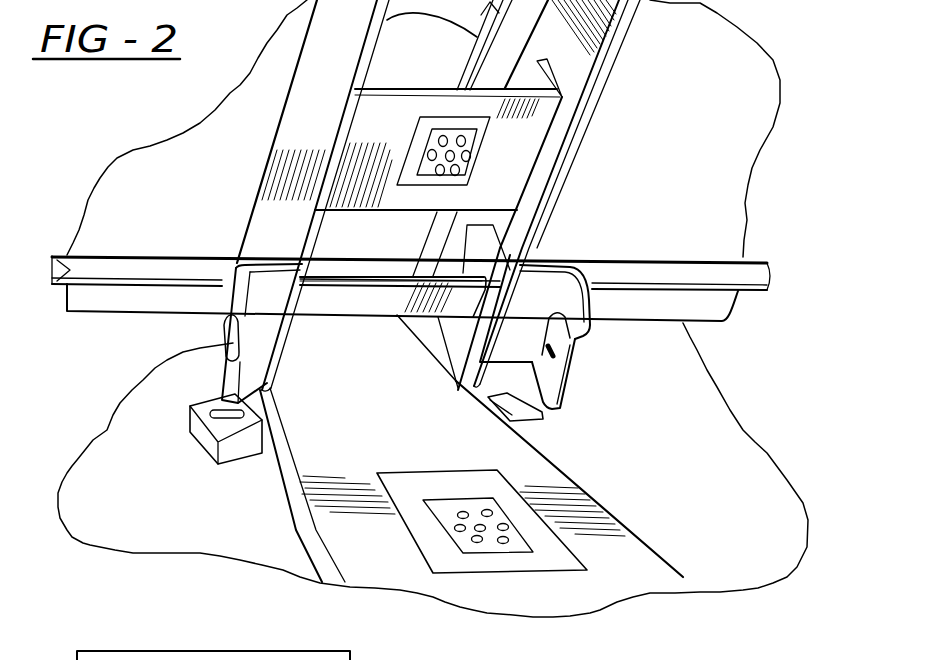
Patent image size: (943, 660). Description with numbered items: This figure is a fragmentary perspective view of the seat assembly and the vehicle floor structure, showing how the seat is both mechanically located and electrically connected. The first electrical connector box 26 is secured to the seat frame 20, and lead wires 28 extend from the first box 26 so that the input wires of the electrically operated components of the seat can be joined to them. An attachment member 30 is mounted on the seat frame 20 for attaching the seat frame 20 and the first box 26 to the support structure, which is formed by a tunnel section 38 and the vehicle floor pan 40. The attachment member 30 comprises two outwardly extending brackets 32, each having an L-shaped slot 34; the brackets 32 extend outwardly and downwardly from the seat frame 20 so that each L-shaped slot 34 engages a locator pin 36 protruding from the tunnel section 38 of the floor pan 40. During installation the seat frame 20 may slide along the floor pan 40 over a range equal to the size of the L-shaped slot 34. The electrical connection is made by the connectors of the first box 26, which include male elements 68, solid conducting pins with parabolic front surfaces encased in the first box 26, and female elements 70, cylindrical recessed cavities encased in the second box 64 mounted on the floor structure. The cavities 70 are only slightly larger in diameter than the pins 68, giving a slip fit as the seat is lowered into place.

The seat frame 20 is at (600, 13).
The first electrical connector box 26 is at (420, 133).
The lead wire 28 is at (384, 2).
The attachment member 30 is at (140, 348).
The bracket 32 is at (275, 279).
The L-shaped slot 34 is at (221, 324).
The locator pin 36 is at (196, 404).
The tunnel section 38 is at (367, 394).
The vehicle floor pan 40 is at (738, 534).
The second box 64 is at (548, 564).
The male element (pin) 68 is at (455, 174).
The female element (recessed cavity) 70 is at (480, 545).